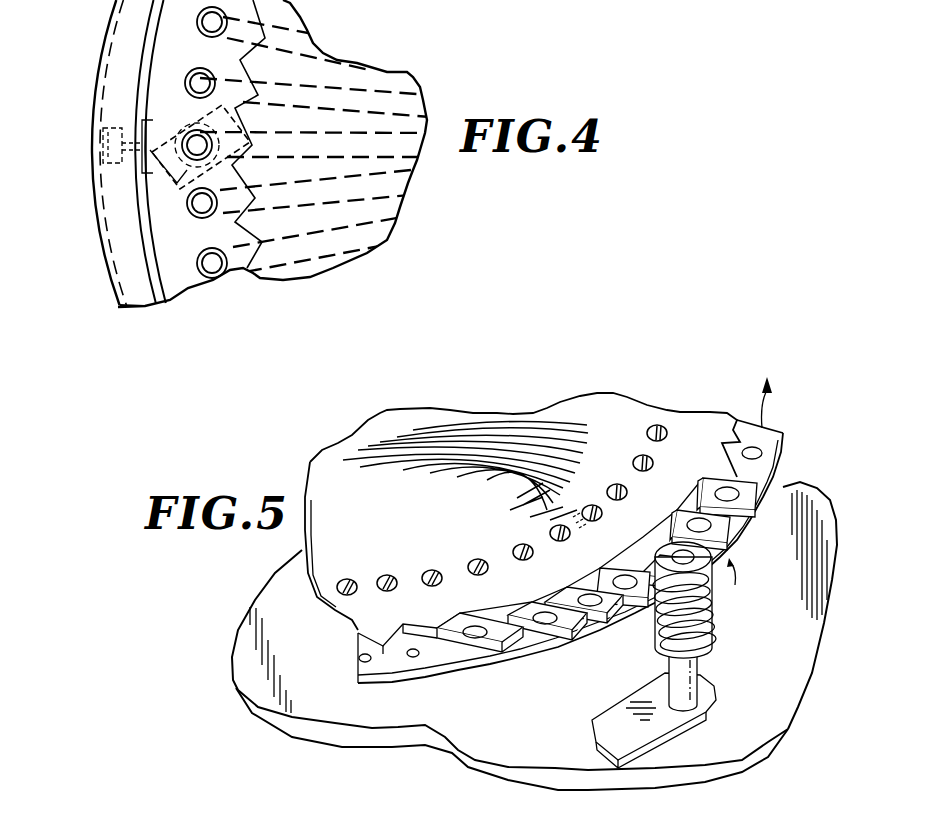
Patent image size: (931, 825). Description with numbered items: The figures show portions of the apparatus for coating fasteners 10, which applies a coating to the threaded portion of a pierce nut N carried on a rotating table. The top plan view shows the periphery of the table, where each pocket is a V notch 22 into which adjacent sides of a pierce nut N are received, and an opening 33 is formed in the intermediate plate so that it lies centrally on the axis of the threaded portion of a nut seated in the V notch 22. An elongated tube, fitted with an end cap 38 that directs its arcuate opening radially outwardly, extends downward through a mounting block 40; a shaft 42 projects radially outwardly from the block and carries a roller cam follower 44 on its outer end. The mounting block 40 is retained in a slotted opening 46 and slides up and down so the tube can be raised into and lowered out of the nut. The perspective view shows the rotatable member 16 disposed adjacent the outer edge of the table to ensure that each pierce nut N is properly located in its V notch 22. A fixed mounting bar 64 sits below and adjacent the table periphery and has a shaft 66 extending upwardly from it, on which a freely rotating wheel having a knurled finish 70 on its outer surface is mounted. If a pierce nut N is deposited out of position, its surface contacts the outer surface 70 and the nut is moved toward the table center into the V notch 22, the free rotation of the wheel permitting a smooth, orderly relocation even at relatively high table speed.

In FIG. 4, the apparatus for coating fasteners 10 is at (120, 99).
In FIG. 4, the opening 33 is at (194, 142).
In FIG. 4, the end cap 38 is at (237, 167).
In FIG. 4, the mounting block 40 is at (152, 184).
In FIG. 4, the shaft 42 is at (141, 157).
In FIG. 4, the roller cam follower 44 is at (101, 137).
In FIG. 4, the slotted opening 46 is at (183, 187).
In FIG. 5, the rotatable member 16 is at (646, 655).
In FIG. 5, the V notch 22 is at (743, 399).
In FIG. 5, the pierce nut N is at (750, 498).
In FIG. 5, the fixed mounting bar 64 is at (612, 720).
In FIG. 5, the shaft 66 is at (696, 668).
In FIG. 5, the knurled finish 70 is at (713, 604).